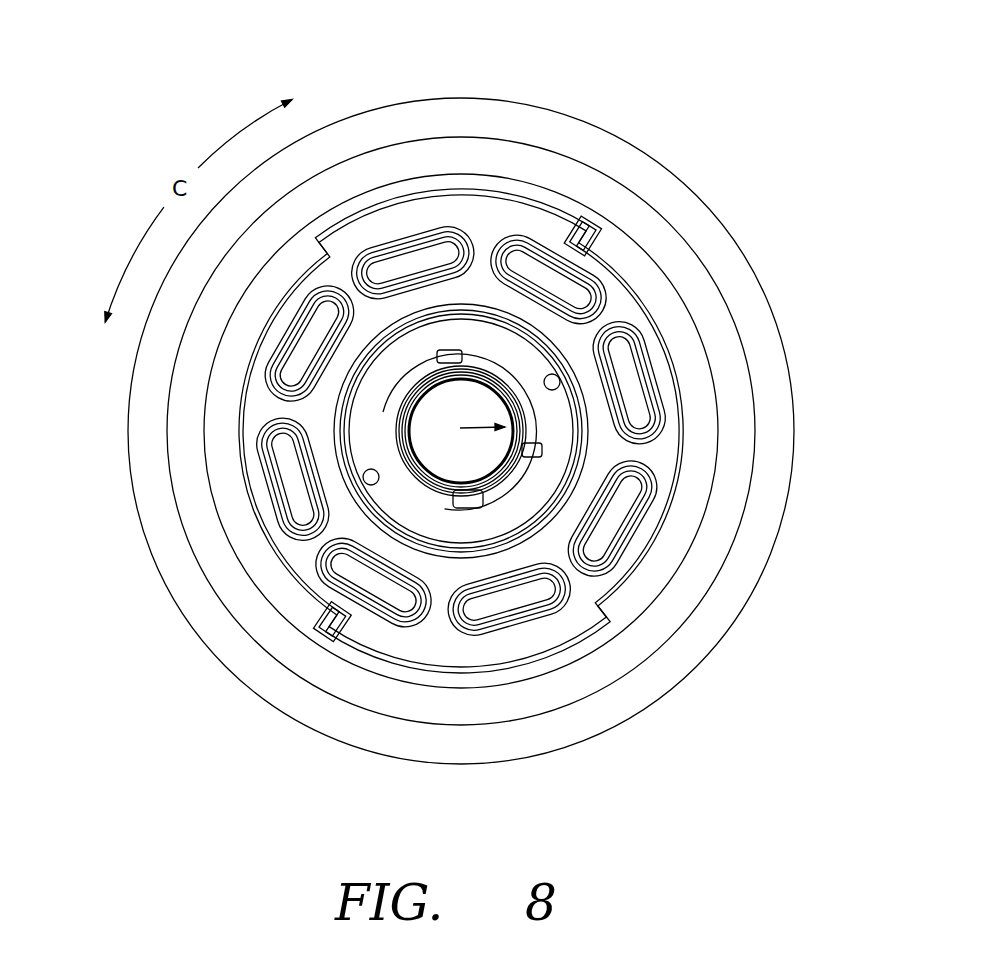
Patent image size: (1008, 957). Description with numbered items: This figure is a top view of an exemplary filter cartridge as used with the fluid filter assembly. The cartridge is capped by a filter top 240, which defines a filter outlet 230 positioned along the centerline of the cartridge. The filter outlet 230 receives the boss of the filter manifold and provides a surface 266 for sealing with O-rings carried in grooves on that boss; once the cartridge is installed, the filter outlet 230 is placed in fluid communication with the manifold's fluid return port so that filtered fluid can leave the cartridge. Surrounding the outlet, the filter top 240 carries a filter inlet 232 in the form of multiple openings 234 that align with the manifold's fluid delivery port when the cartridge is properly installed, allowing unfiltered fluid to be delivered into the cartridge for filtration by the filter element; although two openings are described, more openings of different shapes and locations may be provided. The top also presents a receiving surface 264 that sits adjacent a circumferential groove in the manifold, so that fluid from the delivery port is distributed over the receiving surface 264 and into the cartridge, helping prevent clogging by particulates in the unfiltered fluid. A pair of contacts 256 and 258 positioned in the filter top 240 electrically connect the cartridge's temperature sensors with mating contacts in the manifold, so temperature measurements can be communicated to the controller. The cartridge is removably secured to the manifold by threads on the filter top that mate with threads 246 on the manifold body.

The filter outlet 230 is at (486, 411).
The filter inlet 232 is at (470, 348).
The openings 234 is at (380, 417).
The filter top 240 is at (157, 373).
The threads 246 is at (456, 210).
The contact 256 is at (372, 484).
The contact 258 is at (561, 382).
The receiving surface 264 is at (390, 362).
The surface 266 is at (420, 446).